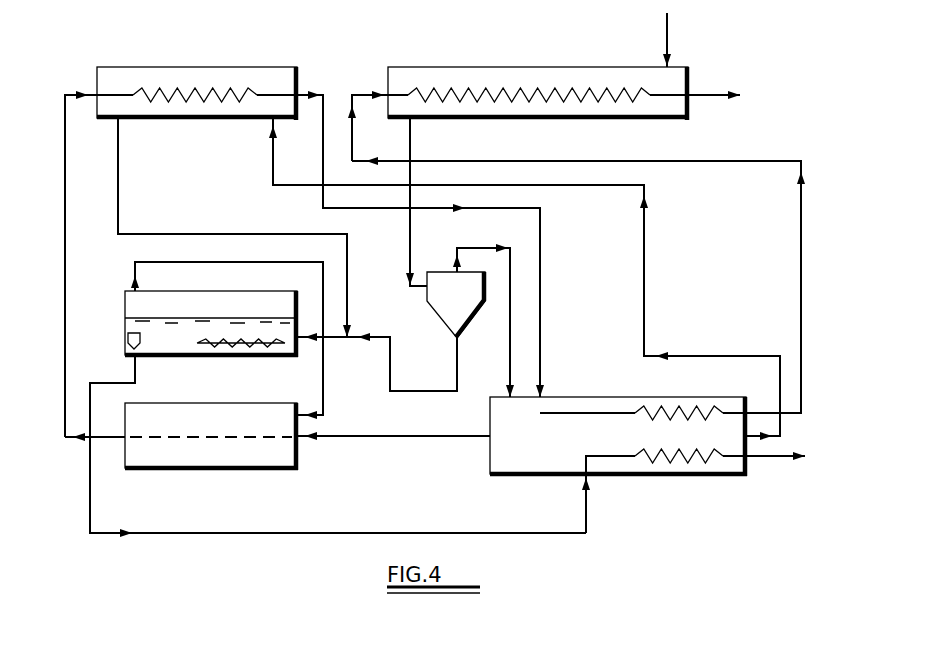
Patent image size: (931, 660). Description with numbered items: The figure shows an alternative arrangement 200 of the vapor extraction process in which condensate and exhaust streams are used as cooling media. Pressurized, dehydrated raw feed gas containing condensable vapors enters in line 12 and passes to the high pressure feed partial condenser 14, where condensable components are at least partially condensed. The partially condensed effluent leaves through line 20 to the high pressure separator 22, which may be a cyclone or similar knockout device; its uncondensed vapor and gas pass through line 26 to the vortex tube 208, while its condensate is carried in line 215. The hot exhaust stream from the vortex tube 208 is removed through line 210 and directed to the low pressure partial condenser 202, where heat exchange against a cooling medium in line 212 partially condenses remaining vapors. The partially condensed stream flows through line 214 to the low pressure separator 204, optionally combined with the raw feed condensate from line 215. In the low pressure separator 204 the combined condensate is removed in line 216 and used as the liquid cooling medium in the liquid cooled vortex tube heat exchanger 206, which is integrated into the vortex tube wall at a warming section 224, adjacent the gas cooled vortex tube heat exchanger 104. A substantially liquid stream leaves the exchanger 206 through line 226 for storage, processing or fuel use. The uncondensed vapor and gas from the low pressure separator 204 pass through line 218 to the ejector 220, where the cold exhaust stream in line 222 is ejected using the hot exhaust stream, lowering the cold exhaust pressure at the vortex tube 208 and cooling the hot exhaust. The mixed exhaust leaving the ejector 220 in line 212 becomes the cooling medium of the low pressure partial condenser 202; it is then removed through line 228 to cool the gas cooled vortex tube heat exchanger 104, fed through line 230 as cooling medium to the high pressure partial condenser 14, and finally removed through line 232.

The alternative arrangement 200 is at (103, 558).
The low pressure partial condenser 202 is at (178, 67).
The high pressure feed partial condenser 14 is at (466, 67).
The feed line 12 is at (666, 45).
The cooling medium removal line 232 is at (700, 93).
The cooling medium line 212 is at (64, 166).
The partially condensed stream line 214 is at (149, 234).
The mixed stream cooling medium line 228 is at (527, 208).
The cooling medium feed line 230 is at (801, 233).
The hot exhaust stream line 210 is at (645, 303).
The partially condensed effluent line 20 is at (410, 243).
The high pressure separator 22 is at (440, 270).
The vortex tube feed line 26 is at (508, 332).
The raw feed condensate line 215 is at (390, 372).
The uncondensed hot exhaust line 218 is at (215, 262).
The low pressure separator 204 is at (212, 291).
The combined condensate line 216 is at (110, 382).
The ejector 220 is at (215, 403).
The cold exhaust stream line 222 is at (437, 438).
The vortex tube 208 is at (520, 475).
The gas cooled vortex tube heat exchanger 104 is at (654, 402).
The liquid cooled vortex tube heat exchanger 206 is at (677, 462).
The warming section 224 is at (658, 432).
The liquid removal line 226 is at (762, 458).